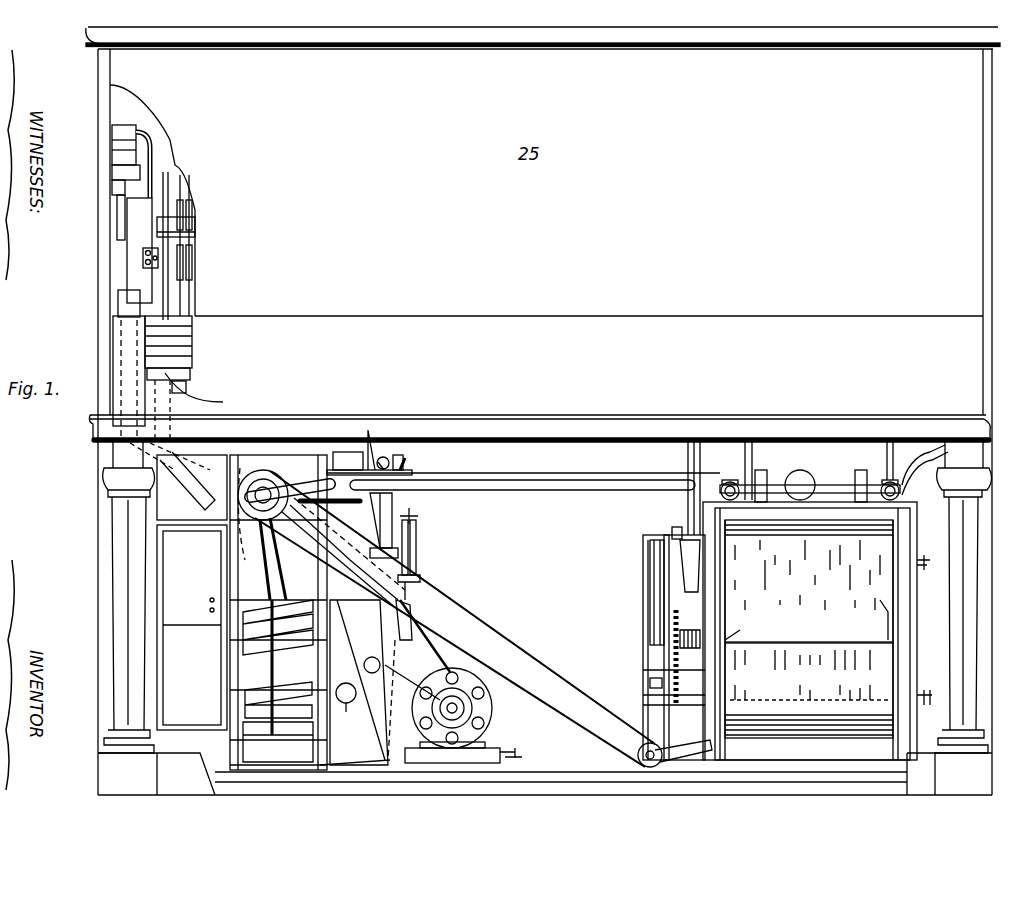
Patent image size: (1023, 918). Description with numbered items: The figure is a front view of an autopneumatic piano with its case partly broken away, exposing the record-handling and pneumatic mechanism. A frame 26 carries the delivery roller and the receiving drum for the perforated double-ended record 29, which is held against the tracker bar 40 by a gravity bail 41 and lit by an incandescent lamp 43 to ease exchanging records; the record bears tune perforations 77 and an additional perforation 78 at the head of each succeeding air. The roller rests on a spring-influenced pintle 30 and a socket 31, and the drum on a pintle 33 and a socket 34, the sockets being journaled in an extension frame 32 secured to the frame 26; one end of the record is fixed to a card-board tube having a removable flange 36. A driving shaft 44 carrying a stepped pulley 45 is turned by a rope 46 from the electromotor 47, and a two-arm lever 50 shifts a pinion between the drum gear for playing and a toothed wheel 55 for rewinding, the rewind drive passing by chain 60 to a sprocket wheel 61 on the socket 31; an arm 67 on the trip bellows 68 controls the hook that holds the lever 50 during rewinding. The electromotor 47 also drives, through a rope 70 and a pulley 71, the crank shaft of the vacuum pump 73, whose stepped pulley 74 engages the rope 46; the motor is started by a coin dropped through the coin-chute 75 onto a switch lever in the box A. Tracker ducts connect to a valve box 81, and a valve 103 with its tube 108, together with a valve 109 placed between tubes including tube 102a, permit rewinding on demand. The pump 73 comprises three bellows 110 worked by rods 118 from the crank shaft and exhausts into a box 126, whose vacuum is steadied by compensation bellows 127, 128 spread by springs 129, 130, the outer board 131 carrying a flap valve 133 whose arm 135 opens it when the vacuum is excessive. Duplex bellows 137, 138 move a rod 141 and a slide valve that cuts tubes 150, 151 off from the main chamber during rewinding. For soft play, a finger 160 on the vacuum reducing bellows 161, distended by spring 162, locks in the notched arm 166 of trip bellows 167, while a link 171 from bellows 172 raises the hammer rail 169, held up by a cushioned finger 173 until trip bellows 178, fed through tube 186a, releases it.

The frame 26 is at (832, 503).
The record 29 is at (809, 581).
The pintle 30 is at (934, 700).
The socket 31 is at (706, 725).
The extension frame 32 is at (645, 663).
The pintle 33 is at (932, 567).
The socket 34 is at (746, 609).
The flange 36 is at (896, 738).
The tracker bar 40 is at (742, 632).
The gravity bail 41 is at (862, 640).
The incandescent lamp 43 is at (801, 476).
The driving shaft 44 is at (668, 605).
The stepped pulley 45 is at (650, 567).
The rope 46 is at (480, 638).
The electromotor 47 is at (478, 734).
The two-arm lever 50 is at (700, 512).
The toothed wheel 55 is at (691, 657).
The chain 60 is at (660, 681).
The sprocket wheel 61 is at (683, 732).
The arm 67 is at (680, 528).
The trip bellows 68 is at (690, 553).
The rope 70 is at (398, 692).
The pulley 71 is at (250, 528).
The vacuum pump 73 is at (278, 612).
The stepped pulley 74 is at (245, 481).
The coin-chute 75 is at (128, 309).
The perforations 77 is at (805, 677).
The additional perforation 78 is at (869, 615).
The valve box 81 is at (192, 352).
The tube 102a is at (890, 478).
The valve 103 is at (721, 477).
The tube 108 is at (750, 455).
The valve 109 is at (900, 480).
The bellows 110 is at (253, 680).
The rod 118 is at (275, 560).
The box 126 is at (347, 549).
The compensation bellows 127 is at (355, 748).
The compensation bellows 128 is at (359, 682).
The spring 129 is at (351, 706).
The spring 130 is at (376, 675).
The outer board 131 is at (407, 700).
The flap valve 133 is at (412, 632).
The arm 135 is at (400, 604).
The duplex bellows 137 is at (412, 545).
The duplex bellows 138 is at (416, 530).
The rod 141 is at (418, 518).
The tube 150 is at (195, 457).
The tube 151 is at (490, 485).
The finger 160 is at (402, 466).
The vacuum reducing bellows 161 is at (396, 495).
The spring 162 is at (392, 455).
The notched arm 166 is at (378, 462).
The trip bellows 167 is at (340, 455).
The hammer rail 169 is at (190, 227).
The link 171 is at (150, 238).
The bellows 172 is at (127, 272).
The cushioned finger 173 is at (122, 190).
The trip bellows 178 is at (128, 147).
The tube 186a is at (162, 176).
The box A is at (182, 612).